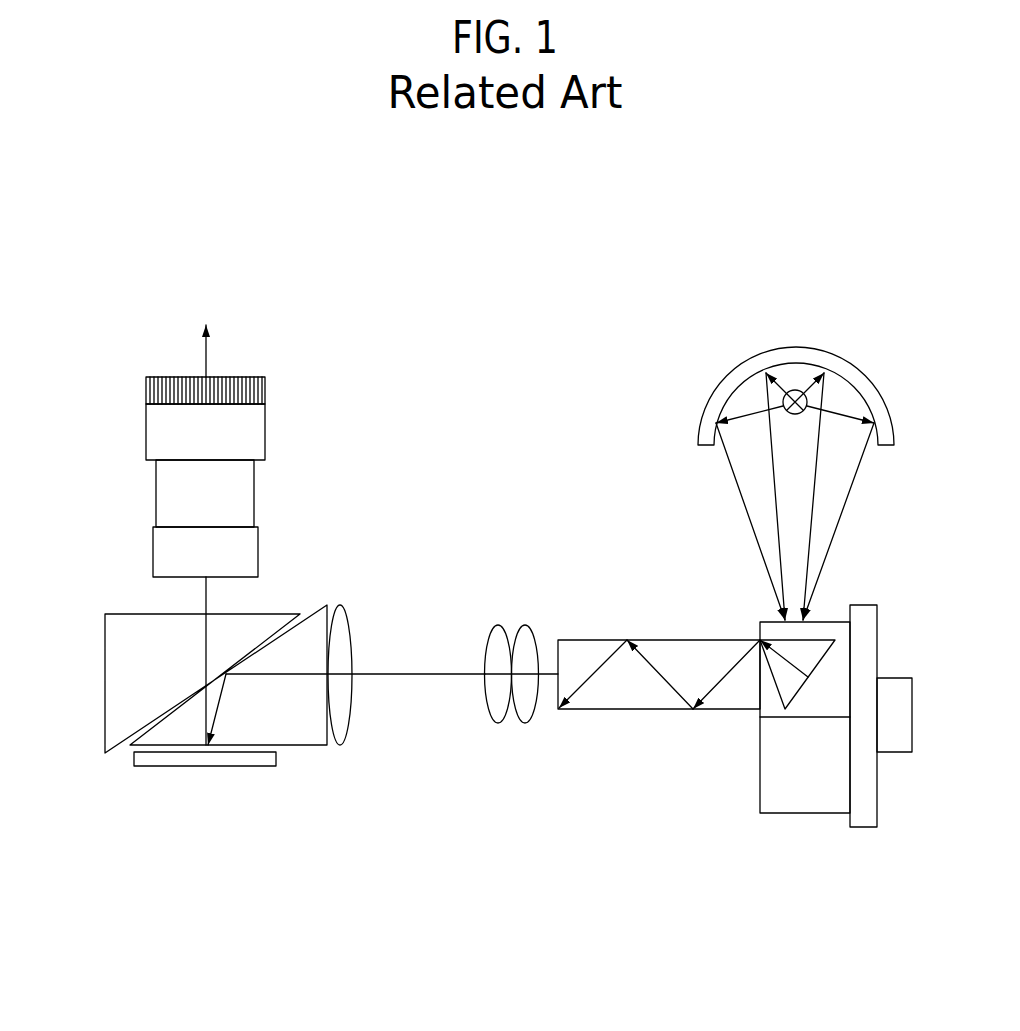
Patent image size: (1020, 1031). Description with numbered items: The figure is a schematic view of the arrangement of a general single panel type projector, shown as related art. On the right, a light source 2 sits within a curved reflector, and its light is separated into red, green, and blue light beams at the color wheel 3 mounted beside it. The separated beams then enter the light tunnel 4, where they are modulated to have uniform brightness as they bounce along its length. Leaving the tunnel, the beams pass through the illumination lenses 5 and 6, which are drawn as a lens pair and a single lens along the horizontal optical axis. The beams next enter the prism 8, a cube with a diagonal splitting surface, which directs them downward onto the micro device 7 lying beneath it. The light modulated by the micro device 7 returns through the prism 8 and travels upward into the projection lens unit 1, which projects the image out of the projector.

The projection lens unit 1 is at (247, 488).
The light source 2 is at (797, 357).
The color wheel 3 is at (863, 817).
The light tunnel 4 is at (630, 710).
The illumination lens 5 is at (527, 716).
The illumination lens 6 is at (340, 735).
The micro device 7 is at (203, 766).
The prism 8 is at (115, 688).